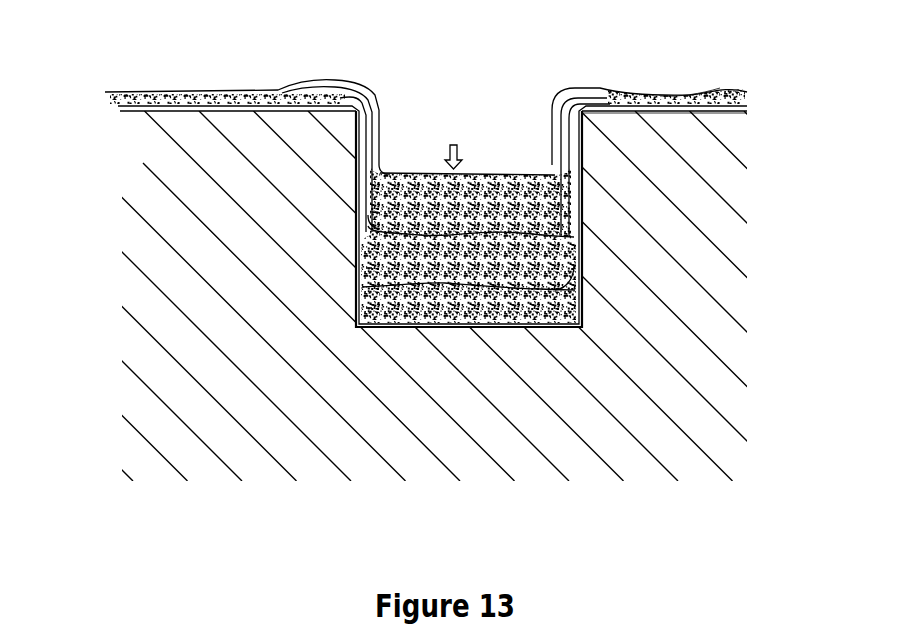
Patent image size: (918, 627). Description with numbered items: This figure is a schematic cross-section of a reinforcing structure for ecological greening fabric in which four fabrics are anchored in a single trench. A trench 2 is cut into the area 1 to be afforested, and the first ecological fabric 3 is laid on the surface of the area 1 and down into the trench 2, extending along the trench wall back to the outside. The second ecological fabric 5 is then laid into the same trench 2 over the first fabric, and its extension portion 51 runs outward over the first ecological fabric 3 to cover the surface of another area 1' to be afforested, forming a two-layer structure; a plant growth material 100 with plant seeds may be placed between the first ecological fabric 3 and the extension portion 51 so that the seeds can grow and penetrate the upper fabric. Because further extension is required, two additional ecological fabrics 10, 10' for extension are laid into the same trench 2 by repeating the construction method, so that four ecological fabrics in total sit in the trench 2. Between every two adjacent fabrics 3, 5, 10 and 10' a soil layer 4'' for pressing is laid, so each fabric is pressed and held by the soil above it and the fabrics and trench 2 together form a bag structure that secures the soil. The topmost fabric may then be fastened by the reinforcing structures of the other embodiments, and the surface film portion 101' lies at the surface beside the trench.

The area to be afforested 1 is at (459, 296).
The another area to be afforested 1' is at (706, 129).
The trench 2 is at (583, 265).
The first ecological fabric 3 is at (175, 107).
The soil layers for pressing 4'' is at (306, 260).
The second ecological fabric 5 is at (583, 294).
The ecological fabric for extension 10 is at (604, 187).
The ecological fabric for extension 10' is at (531, 196).
The extension portion 51 is at (268, 96).
The plant growth material 100 is at (157, 95).
The surface film portion 101' is at (754, 66).